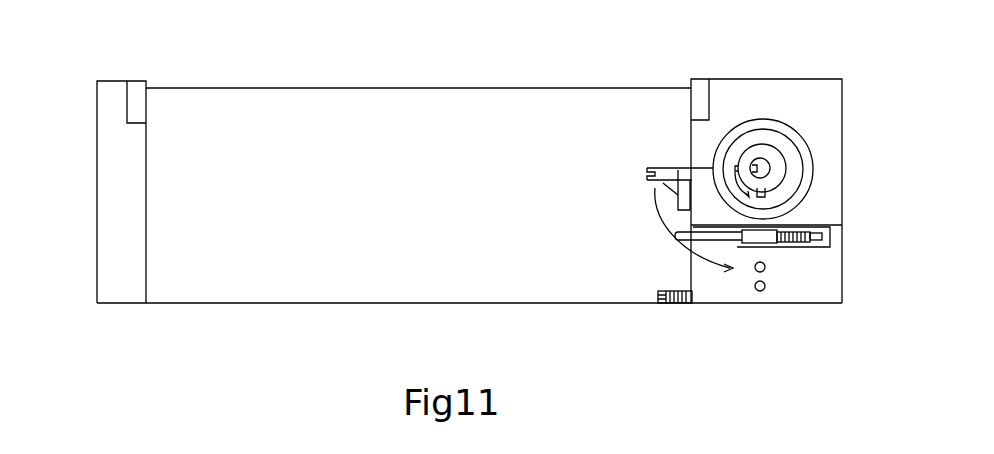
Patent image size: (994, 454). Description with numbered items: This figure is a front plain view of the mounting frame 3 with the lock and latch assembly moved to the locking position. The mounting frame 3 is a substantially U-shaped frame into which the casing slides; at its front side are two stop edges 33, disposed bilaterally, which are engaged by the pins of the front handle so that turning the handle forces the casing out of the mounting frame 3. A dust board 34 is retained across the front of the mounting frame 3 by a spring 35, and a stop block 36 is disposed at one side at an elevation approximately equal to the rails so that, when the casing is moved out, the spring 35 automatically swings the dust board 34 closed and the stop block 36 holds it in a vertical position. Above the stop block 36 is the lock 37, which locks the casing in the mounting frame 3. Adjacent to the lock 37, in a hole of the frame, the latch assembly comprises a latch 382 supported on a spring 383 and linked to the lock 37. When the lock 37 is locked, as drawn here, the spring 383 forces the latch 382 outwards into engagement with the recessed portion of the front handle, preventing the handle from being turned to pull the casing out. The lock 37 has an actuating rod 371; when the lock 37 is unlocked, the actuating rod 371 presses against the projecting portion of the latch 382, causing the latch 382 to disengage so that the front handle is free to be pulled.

The mounting frame 3 is at (800, 79).
The stop edges 33 is at (140, 100).
The dust board 34 is at (380, 88).
The spring 35 is at (673, 307).
The stop block 36 is at (650, 180).
The lock 37 is at (810, 158).
The actuating rod 371 is at (668, 167).
The latch 382 is at (760, 243).
The spring 383 is at (845, 243).